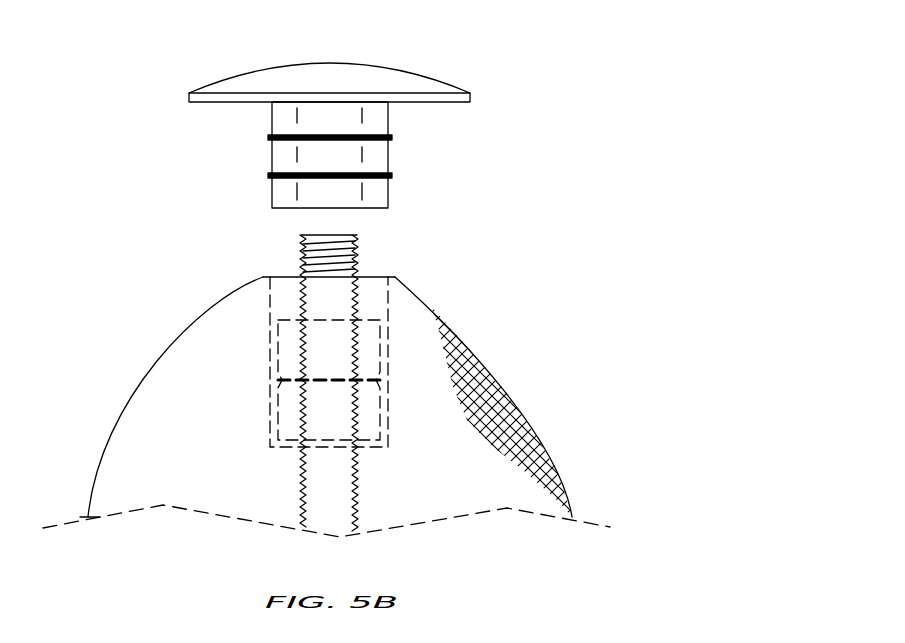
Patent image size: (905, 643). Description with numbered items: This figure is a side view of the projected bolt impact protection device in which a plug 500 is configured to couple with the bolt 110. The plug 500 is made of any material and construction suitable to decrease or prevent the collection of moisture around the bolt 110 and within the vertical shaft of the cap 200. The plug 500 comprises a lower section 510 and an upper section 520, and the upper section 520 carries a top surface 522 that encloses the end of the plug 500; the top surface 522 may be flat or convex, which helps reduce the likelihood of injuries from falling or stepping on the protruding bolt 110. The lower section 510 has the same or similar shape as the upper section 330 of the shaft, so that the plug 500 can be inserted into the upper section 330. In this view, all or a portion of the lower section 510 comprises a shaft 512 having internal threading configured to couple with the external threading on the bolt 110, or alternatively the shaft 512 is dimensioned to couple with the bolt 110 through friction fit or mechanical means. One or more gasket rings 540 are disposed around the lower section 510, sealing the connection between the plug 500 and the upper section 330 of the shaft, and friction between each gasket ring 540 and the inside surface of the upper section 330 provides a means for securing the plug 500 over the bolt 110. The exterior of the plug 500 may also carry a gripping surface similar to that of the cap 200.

The plug 500 is at (384, 117).
The top surface 522 is at (403, 70).
The upper section 520 is at (443, 92).
The lower section 510 is at (389, 195).
The shaft 512 is at (363, 156).
The gasket ring 540 is at (268, 138).
The upper section of vertical shaft 330 is at (270, 300).
The bolt 110 is at (357, 252).
The cap 200 is at (490, 360).